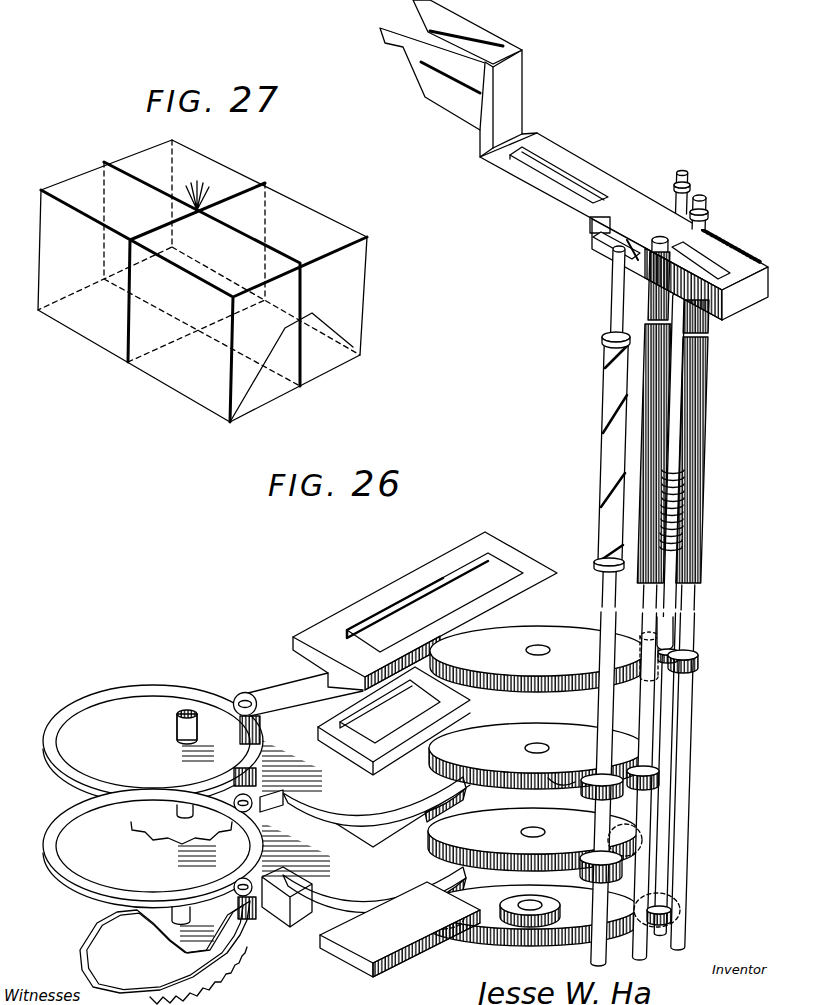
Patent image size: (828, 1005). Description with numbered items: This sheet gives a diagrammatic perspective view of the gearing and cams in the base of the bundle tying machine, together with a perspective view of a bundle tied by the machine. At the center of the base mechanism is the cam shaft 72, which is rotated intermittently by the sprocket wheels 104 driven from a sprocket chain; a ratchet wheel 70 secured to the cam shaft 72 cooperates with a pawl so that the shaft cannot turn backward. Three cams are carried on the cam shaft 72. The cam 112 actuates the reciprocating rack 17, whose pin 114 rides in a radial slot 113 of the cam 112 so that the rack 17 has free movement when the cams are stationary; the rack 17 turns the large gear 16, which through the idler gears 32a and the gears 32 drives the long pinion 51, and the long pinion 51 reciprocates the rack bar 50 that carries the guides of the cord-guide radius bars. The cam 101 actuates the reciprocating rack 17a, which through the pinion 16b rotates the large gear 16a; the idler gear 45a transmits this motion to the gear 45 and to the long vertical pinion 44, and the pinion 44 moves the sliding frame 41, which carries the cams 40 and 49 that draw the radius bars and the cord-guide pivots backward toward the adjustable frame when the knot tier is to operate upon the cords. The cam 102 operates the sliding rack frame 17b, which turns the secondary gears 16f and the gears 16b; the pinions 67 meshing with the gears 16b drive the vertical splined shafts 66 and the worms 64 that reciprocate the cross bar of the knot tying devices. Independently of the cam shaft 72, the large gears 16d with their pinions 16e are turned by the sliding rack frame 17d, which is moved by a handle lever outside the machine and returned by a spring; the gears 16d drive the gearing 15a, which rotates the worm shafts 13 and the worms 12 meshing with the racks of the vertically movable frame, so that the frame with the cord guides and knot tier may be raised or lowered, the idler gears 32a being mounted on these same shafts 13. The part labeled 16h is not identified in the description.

The cams 49 is at (451, 65).
The cam 40 is at (600, 252).
The reciprocating rack bar 50 is at (641, 170).
The sliding frame 41 is at (735, 302).
The long pinion 51 is at (703, 572).
The vertical pinion 44 is at (653, 432).
The worms 12 is at (691, 599).
The worms 64 is at (610, 478).
The worm shafts 13 is at (670, 571).
The vertical shafts 66 is at (607, 580).
The idler gears 32a is at (680, 642).
The gears 32 is at (700, 667).
The idler gear 45a is at (592, 780).
The gear 45 is at (660, 774).
The large gear 16 is at (538, 659).
The large gear 16a is at (537, 756).
The pinion 16h is at (550, 784).
The gears 16b is at (533, 839).
The pinions 67 is at (588, 845).
The secondary gears 16f is at (452, 910).
The pinions 16e is at (549, 911).
The large gears 16d is at (502, 945).
The gearing 15a is at (672, 912).
The reciprocating rack 17 is at (425, 611).
The reciprocating rack 17a is at (352, 746).
The sliding rack frame 17b is at (352, 856).
The sliding rack frame 17d is at (400, 929).
The radial slot 113 is at (301, 708).
The pin 114 is at (246, 696).
The cam 112 is at (153, 744).
The cam shaft 72 is at (177, 731).
The sprocket wheels 104 is at (141, 818).
The cam 101 is at (153, 848).
The cam 102 is at (165, 947).
The ratchet wheel 70 is at (213, 975).